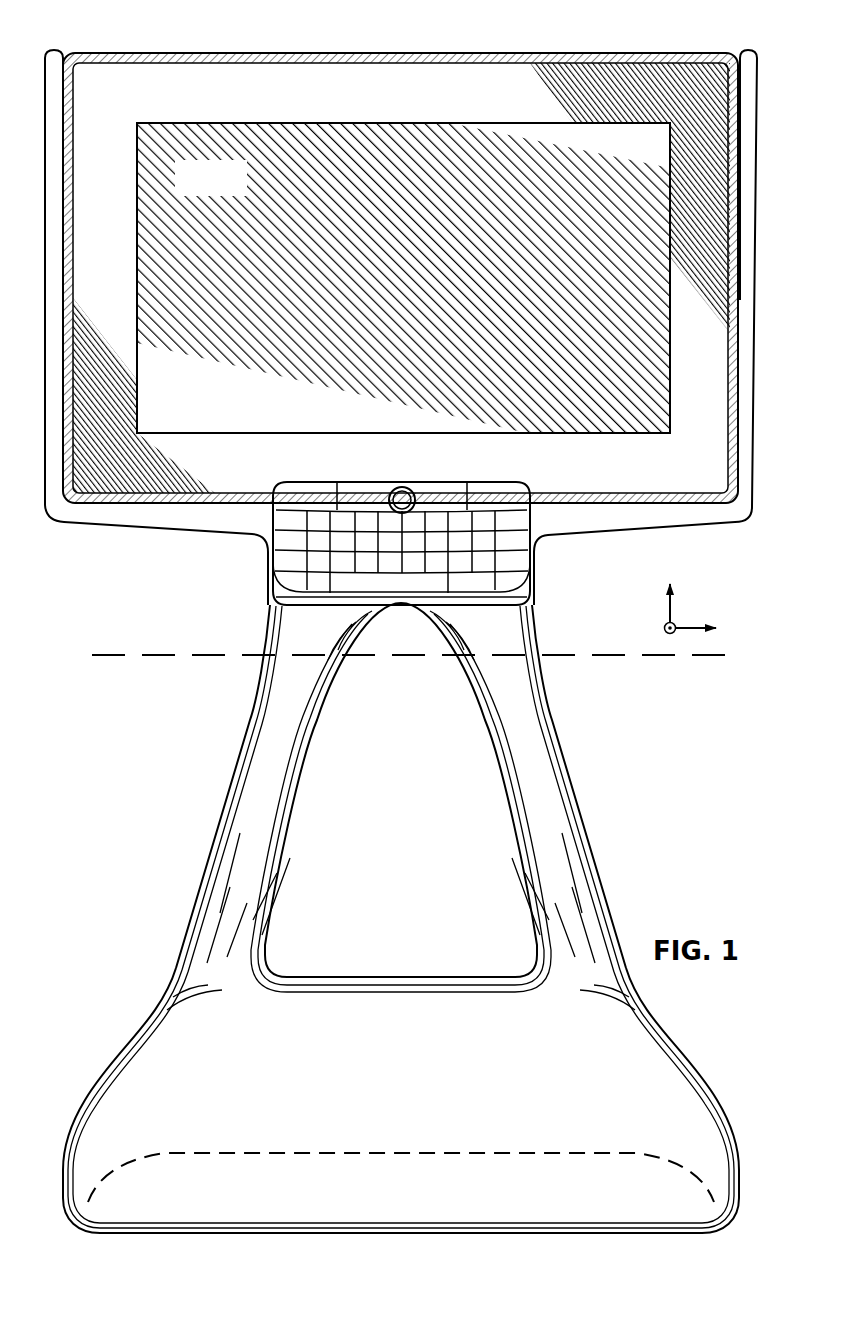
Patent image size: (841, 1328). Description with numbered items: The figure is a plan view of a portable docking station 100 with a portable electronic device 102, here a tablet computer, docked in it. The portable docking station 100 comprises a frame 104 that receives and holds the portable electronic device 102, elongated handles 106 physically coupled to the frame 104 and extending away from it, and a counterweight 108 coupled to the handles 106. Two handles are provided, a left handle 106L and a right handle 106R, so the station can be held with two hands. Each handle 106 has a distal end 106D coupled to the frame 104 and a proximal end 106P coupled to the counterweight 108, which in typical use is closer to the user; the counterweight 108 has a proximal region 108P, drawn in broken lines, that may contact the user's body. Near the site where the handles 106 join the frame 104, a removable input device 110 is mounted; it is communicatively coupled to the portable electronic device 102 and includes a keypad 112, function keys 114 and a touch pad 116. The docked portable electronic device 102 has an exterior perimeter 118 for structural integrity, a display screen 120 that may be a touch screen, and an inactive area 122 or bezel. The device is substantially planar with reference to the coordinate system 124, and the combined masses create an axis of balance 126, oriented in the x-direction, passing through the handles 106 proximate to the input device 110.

The portable docking station 100 is at (175, 771).
The portable electronic device 102 is at (146, 91).
The frame 104 is at (98, 514).
The handle 106 is at (453, 799).
The distal end 106D is at (260, 633).
The left handle 106L is at (273, 922).
The right handle 106R is at (527, 910).
The proximal end 106P is at (170, 946).
The counterweight 108 is at (148, 1090).
The proximal region 108P is at (273, 1170).
The input device 110 is at (284, 581).
The keypad 112 is at (507, 564).
The function keys 114 is at (489, 496).
The touch pad 116 is at (408, 492).
The exterior perimeter 118 is at (346, 54).
The display screen 120 is at (231, 187).
The inactive area 122 is at (212, 71).
The coordinate system 124 is at (716, 588).
The axis of balance 126 is at (618, 657).